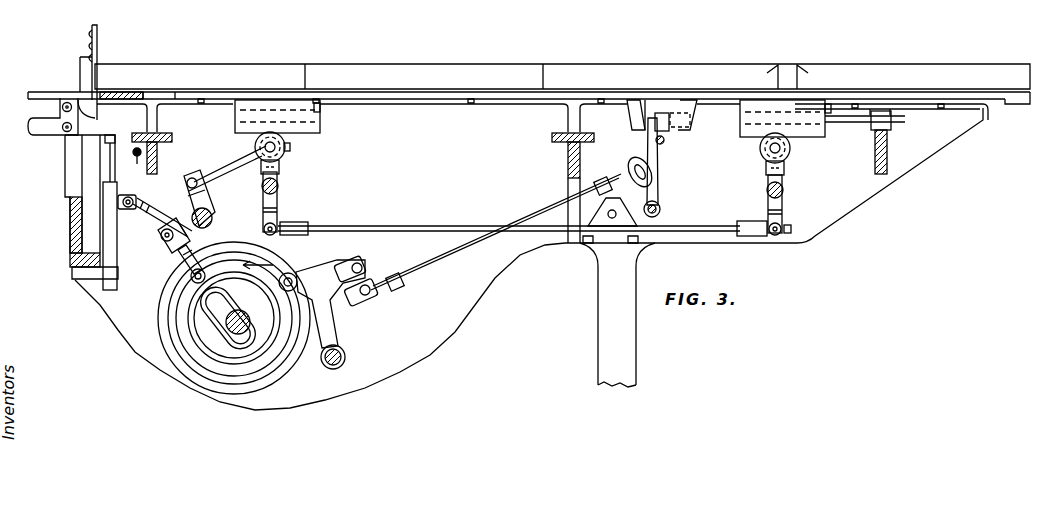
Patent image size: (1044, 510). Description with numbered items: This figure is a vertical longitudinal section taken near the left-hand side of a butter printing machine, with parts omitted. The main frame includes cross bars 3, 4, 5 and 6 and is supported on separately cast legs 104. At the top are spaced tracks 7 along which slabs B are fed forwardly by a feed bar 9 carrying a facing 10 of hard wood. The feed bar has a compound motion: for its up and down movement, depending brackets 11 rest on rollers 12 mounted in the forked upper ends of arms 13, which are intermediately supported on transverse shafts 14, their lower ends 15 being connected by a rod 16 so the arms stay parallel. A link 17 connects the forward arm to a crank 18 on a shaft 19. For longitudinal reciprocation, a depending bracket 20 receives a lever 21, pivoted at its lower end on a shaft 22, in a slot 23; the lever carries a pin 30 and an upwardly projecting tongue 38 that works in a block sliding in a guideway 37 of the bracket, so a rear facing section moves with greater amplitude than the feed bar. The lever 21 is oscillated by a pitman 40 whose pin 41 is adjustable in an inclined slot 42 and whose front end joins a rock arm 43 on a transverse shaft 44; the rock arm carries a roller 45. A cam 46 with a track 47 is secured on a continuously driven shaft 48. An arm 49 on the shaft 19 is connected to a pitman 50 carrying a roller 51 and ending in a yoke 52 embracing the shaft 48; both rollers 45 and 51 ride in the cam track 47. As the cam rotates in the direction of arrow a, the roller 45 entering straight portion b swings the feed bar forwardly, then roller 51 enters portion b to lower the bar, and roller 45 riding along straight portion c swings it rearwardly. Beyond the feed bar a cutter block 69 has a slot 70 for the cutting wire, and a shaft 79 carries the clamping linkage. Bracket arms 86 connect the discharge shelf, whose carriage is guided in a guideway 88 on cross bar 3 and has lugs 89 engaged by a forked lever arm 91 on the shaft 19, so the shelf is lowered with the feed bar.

The cross bar 3 is at (68, 224).
The cross bar 4 is at (160, 153).
The cross bar 5 is at (566, 152).
The cross bar 6 is at (888, 151).
The track 7 is at (1014, 103).
The feed bar 9 is at (447, 99).
The facing 10 is at (465, 93).
The depending bracket 11 is at (310, 128).
The roller 12 is at (284, 151).
The arm 13 is at (280, 166).
The transverse shaft 14 is at (280, 185).
The lower end of arm 15 is at (278, 212).
The rod 16 is at (693, 228).
The link 17 is at (246, 160).
The crank 18 is at (203, 186).
The shaft 19 is at (210, 217).
The depending bracket 20 is at (676, 130).
The lever 21 is at (660, 170).
The shaft 22 is at (661, 205).
The slot 23 is at (665, 135).
The pin 30 is at (656, 141).
The guideway 37 is at (644, 115).
The tongue 38 is at (640, 130).
The pitman 40 is at (458, 253).
The pin 41 is at (630, 172).
The inclined slot 42 is at (662, 186).
The rock arm 43 is at (345, 322).
The transverse shaft 44 is at (345, 350).
The roller 45 is at (293, 278).
The cam 46 is at (272, 251).
The cam track 47 is at (242, 251).
The transverse shaft 48 is at (240, 315).
The arm 49 is at (164, 240).
The pitman 50 is at (183, 264).
The roller 51 is at (228, 318).
The yoke 52 is at (223, 340).
The cutter block 69 is at (155, 87).
The slot 70 is at (132, 87).
The shaft 79 is at (132, 164).
The bracket arm 86 is at (85, 74).
The guideway 88 is at (110, 276).
The lug 89 is at (131, 210).
The lever arm 91 is at (163, 207).
The leg 104 is at (602, 313).
The direction of cam rotation a is at (258, 262).
The straight portion of cam track b is at (285, 350).
The straight portion of cam track c is at (195, 362).
The slab B is at (787, 63).